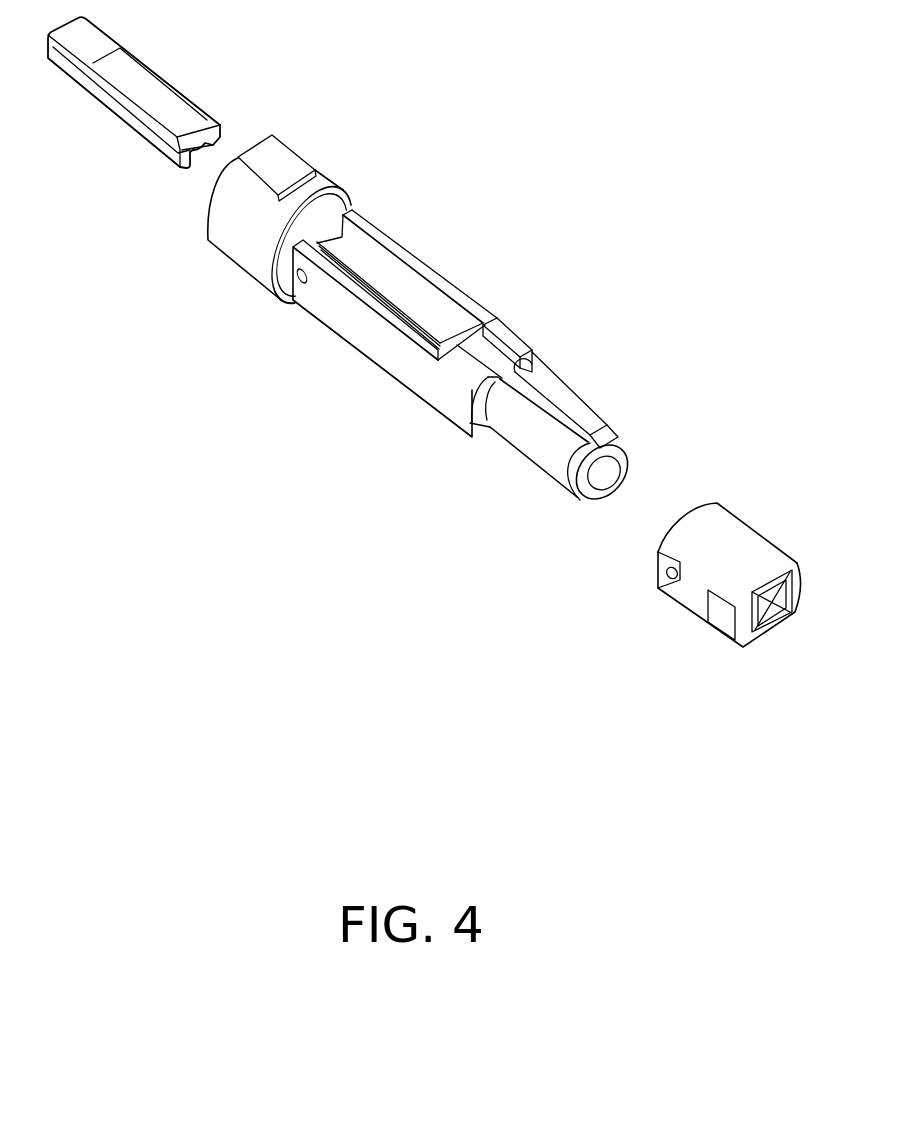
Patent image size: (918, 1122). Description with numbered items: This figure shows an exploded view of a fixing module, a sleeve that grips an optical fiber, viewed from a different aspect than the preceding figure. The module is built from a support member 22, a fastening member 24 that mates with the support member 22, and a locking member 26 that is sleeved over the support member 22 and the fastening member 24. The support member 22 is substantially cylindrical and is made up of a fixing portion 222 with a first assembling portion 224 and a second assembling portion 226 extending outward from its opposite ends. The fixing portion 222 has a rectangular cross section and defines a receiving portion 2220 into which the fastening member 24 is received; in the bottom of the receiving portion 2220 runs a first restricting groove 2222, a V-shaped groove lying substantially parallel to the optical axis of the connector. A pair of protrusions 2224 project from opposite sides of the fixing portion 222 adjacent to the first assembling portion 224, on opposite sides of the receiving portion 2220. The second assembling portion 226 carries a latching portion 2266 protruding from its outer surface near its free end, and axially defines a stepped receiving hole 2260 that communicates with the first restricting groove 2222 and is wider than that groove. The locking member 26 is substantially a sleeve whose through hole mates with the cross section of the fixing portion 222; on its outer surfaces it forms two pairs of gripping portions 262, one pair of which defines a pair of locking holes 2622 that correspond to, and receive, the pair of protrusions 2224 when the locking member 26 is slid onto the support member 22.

The support member 22 is at (410, 403).
The fastening member 24 is at (107, 100).
The locking member 26 is at (693, 630).
The fixing portion 222 is at (367, 330).
The first assembling portion 224 is at (237, 232).
The second assembling portion 226 is at (543, 443).
The gripping portions 262 is at (668, 590).
The receiving portion 2220 is at (423, 290).
The first restricting groove 2222 is at (330, 242).
The protrusions 2224 is at (302, 285).
The receiving hole 2260 is at (608, 468).
The latching portion 2266 is at (567, 480).
The locking holes 2622 is at (665, 573).